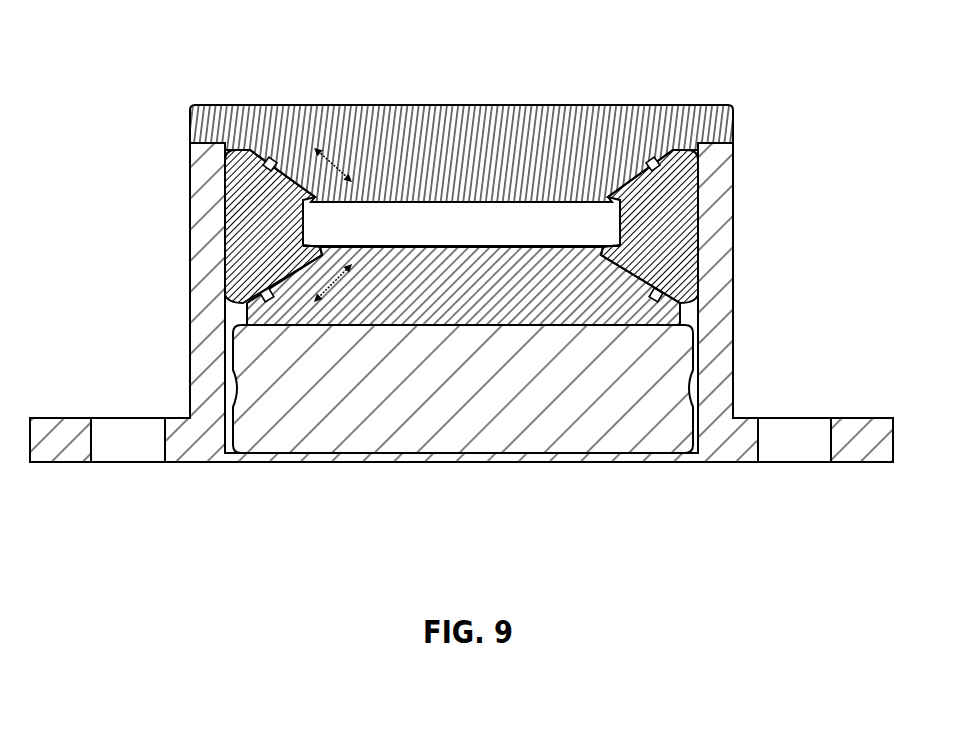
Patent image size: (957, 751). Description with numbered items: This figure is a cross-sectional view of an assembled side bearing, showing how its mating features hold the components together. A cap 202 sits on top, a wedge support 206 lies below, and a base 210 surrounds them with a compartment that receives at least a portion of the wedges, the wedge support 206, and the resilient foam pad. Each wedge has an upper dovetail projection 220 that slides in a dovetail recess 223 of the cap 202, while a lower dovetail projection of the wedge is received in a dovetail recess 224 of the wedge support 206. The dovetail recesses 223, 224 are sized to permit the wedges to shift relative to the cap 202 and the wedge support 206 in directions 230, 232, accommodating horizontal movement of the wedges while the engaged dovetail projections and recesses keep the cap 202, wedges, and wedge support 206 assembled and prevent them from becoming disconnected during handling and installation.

The cap 202 is at (496, 117).
The wedge support 206 is at (428, 308).
The base 210 is at (718, 225).
The upper dovetail projection 220 is at (272, 188).
The dovetail recess 223 is at (278, 157).
The dovetail recess 224 is at (292, 268).
The direction 230 is at (330, 165).
The direction 232 is at (335, 283).